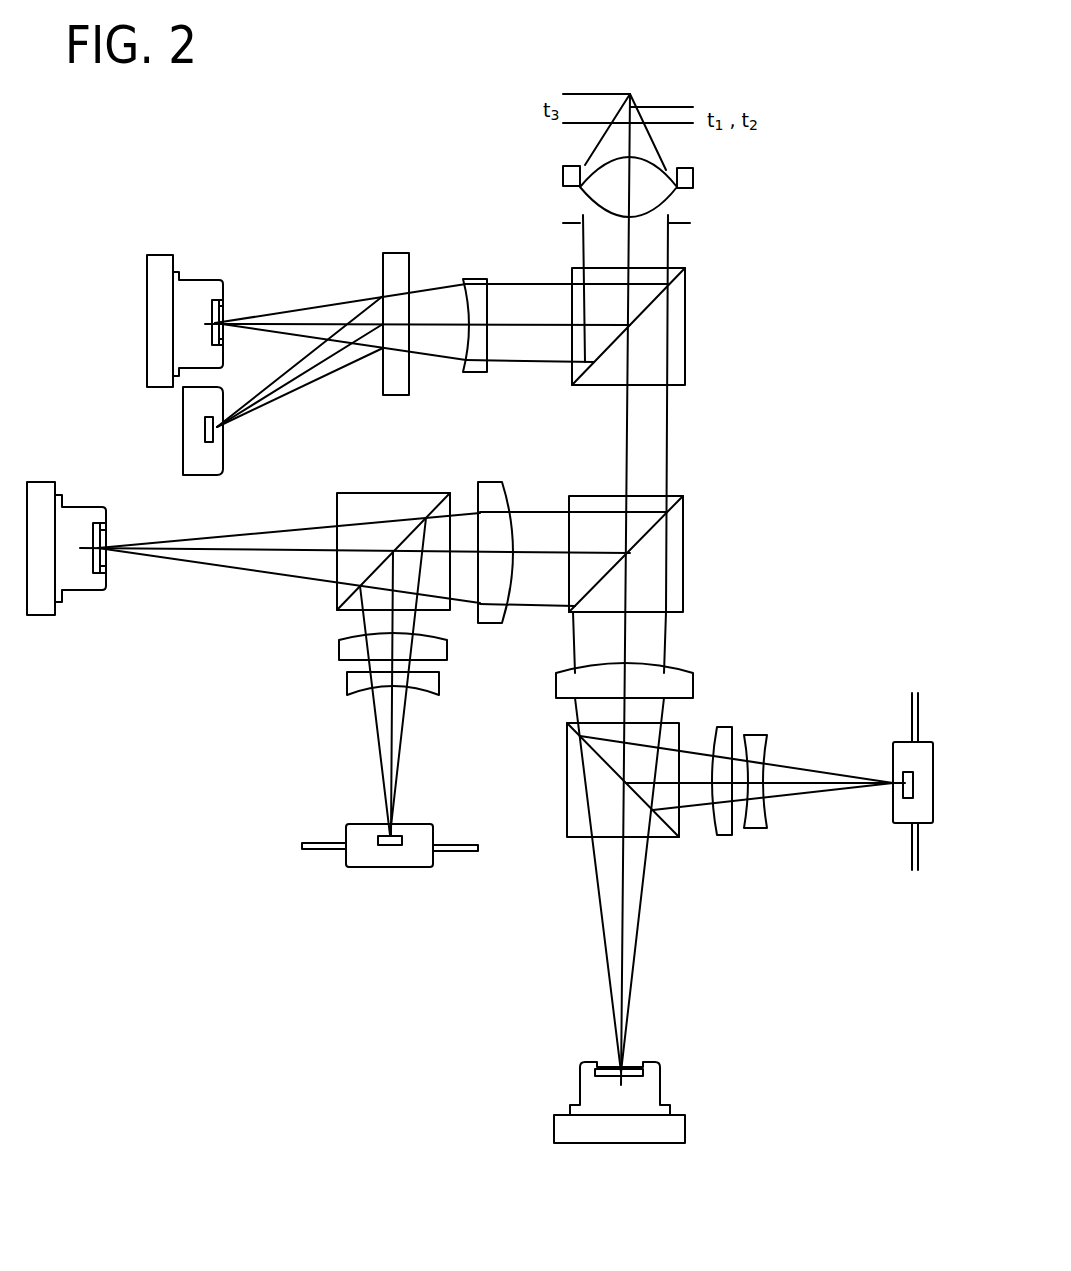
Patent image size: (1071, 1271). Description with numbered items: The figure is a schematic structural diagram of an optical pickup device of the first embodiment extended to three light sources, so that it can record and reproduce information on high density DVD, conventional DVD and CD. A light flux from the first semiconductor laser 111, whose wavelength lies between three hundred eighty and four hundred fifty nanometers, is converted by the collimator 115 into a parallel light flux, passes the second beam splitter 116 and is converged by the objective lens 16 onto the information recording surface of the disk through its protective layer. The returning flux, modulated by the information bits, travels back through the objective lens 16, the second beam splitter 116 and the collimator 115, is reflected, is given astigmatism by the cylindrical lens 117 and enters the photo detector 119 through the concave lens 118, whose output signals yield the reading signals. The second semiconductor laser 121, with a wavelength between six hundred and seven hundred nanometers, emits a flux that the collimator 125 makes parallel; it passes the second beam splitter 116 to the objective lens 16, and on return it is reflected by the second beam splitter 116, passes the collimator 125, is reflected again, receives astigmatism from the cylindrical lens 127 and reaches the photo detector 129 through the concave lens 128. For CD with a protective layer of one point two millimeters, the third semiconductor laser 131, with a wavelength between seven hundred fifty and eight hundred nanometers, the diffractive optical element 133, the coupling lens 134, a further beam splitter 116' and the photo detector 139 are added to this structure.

The objective lens 16 is at (695, 178).
The first semiconductor laser 111 is at (663, 1085).
The collimator 115 is at (695, 688).
The second beam splitter 116 is at (673, 554).
The beam splitter 116' is at (675, 326).
The cylindrical lens 117 is at (722, 835).
The concave lens 118 is at (752, 830).
The photo detector 119 is at (899, 828).
The second semiconductor laser 121 is at (83, 505).
The collimator 125 is at (493, 480).
The cylindrical lens 127 is at (338, 650).
The concave lens 128 is at (345, 680).
The photo detector 129 is at (421, 862).
The third semiconductor laser 131 is at (202, 278).
The diffractive optical element 133 is at (397, 253).
The coupling lens 134 is at (488, 279).
The photo detector 139 is at (213, 457).